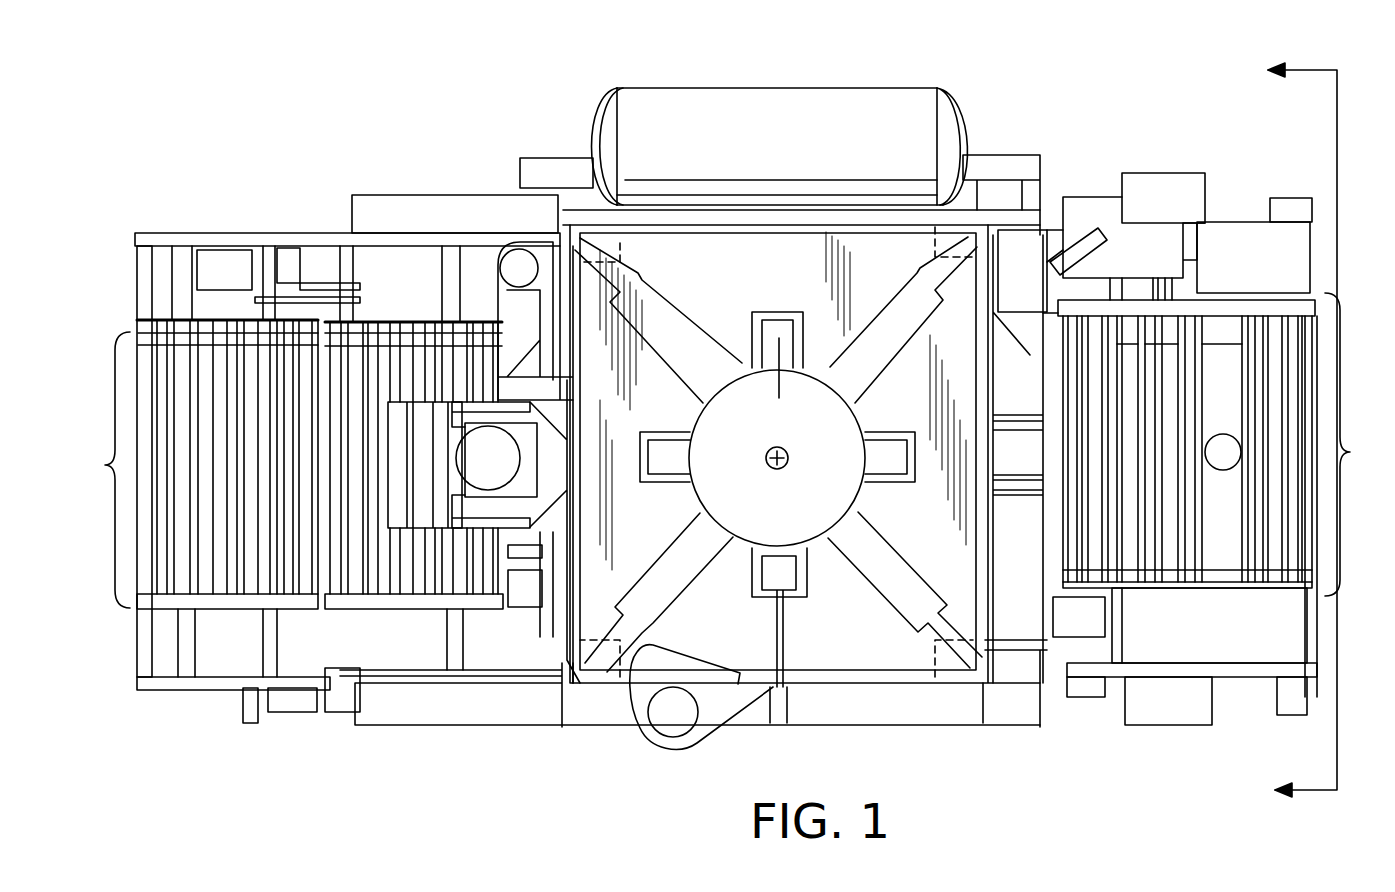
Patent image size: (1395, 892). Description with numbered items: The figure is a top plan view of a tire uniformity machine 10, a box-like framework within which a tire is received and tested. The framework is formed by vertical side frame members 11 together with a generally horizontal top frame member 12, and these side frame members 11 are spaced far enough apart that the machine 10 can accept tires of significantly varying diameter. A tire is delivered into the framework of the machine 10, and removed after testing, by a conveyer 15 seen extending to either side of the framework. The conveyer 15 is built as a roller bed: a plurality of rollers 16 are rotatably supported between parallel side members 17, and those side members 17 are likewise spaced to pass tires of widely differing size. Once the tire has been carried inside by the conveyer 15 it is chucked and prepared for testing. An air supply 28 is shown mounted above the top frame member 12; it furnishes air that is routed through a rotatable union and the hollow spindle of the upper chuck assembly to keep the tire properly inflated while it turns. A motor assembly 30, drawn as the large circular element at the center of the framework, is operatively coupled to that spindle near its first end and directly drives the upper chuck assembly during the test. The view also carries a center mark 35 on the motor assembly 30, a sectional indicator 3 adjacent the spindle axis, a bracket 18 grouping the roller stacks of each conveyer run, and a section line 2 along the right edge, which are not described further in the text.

The tire uniformity machine 10 is at (423, 148).
The air supply 28 is at (694, 112).
The vertical side frame members 11 is at (600, 232).
The top frame member 12 is at (928, 690).
The motor assembly 30 is at (735, 352).
The hub center axle 35 is at (773, 460).
The section line 3- 3 is at (786, 338).
The conveyer 15 is at (278, 226).
The rollers 16 is at (410, 326).
The side members 17 is at (188, 232).
The plate stacks 18 is at (721, 451).
The section line 2- 2 is at (1190, 432).